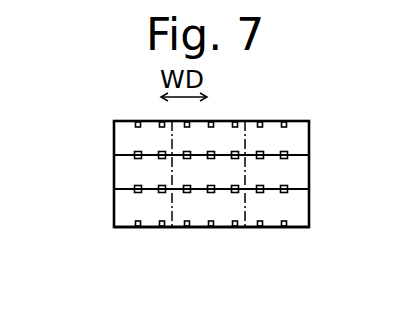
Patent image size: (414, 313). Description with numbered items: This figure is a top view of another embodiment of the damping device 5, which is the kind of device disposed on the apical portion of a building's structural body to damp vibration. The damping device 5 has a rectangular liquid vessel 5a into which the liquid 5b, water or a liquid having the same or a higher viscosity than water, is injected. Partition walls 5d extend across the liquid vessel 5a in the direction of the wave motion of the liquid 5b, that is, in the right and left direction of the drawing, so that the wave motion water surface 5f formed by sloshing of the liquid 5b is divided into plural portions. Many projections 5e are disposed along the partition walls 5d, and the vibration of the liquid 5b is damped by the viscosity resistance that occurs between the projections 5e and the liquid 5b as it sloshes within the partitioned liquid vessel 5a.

The damping device 5 is at (79, 183).
The liquid vessel 5a is at (203, 228).
The liquid 5b is at (253, 143).
The partition walls 5d is at (298, 154).
The projections 5e is at (163, 158).
The wave motion water surface 5f is at (222, 127).